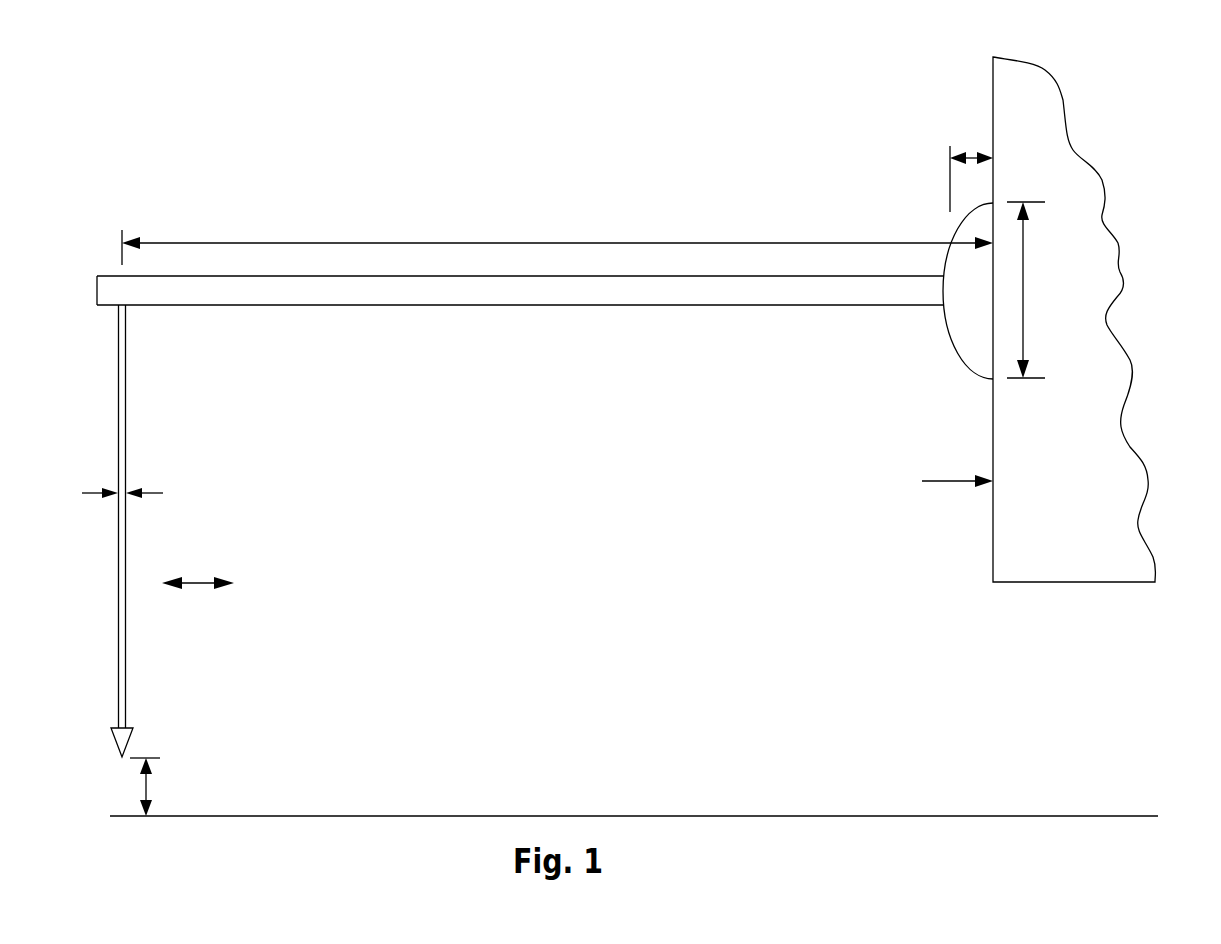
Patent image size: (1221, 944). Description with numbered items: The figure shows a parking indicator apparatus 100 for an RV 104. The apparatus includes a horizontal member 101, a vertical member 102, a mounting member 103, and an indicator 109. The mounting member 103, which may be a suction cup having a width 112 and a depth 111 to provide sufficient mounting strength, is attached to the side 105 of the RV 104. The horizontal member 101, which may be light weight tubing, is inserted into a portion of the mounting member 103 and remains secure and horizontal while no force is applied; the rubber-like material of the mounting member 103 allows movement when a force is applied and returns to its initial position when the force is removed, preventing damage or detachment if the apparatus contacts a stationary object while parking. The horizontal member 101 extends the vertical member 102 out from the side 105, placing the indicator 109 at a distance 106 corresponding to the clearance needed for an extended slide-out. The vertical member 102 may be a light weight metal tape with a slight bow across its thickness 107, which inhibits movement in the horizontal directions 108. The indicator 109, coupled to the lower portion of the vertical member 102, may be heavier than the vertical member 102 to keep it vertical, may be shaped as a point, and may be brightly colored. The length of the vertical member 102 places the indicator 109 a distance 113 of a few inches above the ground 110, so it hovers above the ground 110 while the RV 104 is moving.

The parking indicator apparatus 100 is at (357, 101).
The horizontal member 101 is at (410, 306).
The vertical member 102 is at (118, 610).
The mounting member 103 is at (963, 362).
The RV 104 is at (1042, 113).
The side of RV 105 is at (940, 482).
The distance 106 is at (571, 251).
The thickness 107 is at (121, 493).
The horizontal directions 108 is at (200, 583).
The indicator 109 is at (123, 754).
The ground 110 is at (405, 815).
The depth 111 is at (974, 146).
The width 112 is at (1022, 297).
The distance 113 is at (147, 787).